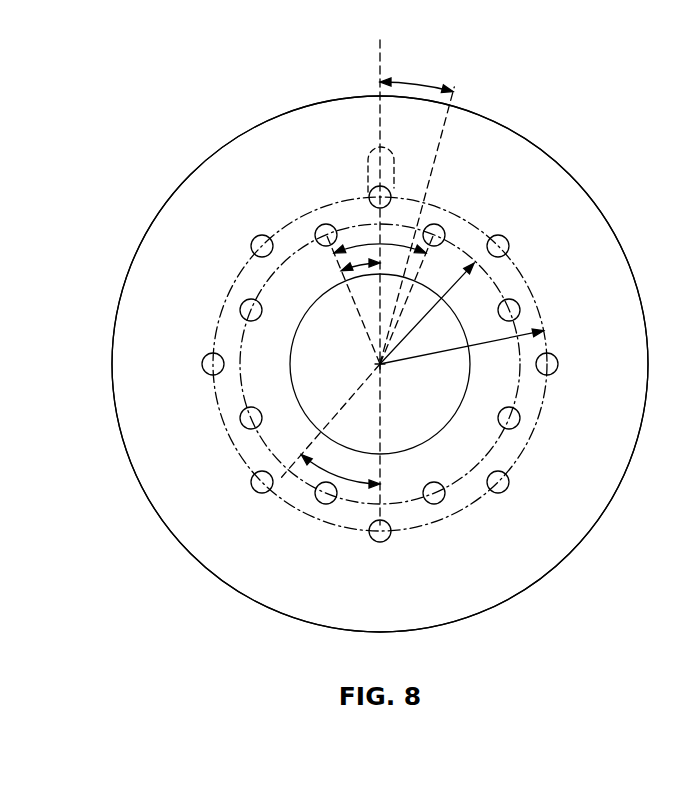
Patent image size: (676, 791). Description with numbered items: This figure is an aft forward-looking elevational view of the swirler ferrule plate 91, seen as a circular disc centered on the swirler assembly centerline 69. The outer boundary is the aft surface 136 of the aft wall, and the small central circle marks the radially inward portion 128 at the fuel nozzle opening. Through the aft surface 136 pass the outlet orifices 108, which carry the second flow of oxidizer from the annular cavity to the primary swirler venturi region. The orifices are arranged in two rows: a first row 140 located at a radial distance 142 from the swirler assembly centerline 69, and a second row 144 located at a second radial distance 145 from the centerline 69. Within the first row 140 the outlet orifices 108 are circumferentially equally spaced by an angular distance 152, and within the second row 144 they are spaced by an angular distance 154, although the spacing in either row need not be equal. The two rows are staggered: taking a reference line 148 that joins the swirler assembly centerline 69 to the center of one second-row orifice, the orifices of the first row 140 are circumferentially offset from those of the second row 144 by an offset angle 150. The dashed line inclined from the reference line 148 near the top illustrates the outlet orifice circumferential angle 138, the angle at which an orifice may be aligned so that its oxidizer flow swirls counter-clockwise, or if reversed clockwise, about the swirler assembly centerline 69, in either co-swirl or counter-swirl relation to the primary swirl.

The swirler ferrule plate 91 is at (558, 145).
The outlet orifices 108 is at (432, 503).
The radially inward portion 128 is at (300, 382).
The aft surface 136 is at (430, 595).
The outlet orifice circumferential angle 138 is at (418, 82).
The first row 140 is at (498, 443).
The radial distance 142 is at (462, 279).
The second row 144 is at (547, 403).
The second radial distance 145 is at (443, 353).
The reference line 148 is at (380, 72).
The offset angle 150 is at (352, 273).
The angular distance 152 is at (350, 250).
The angular distance 154 is at (313, 463).
The swirler assembly centerline 69 is at (378, 363).